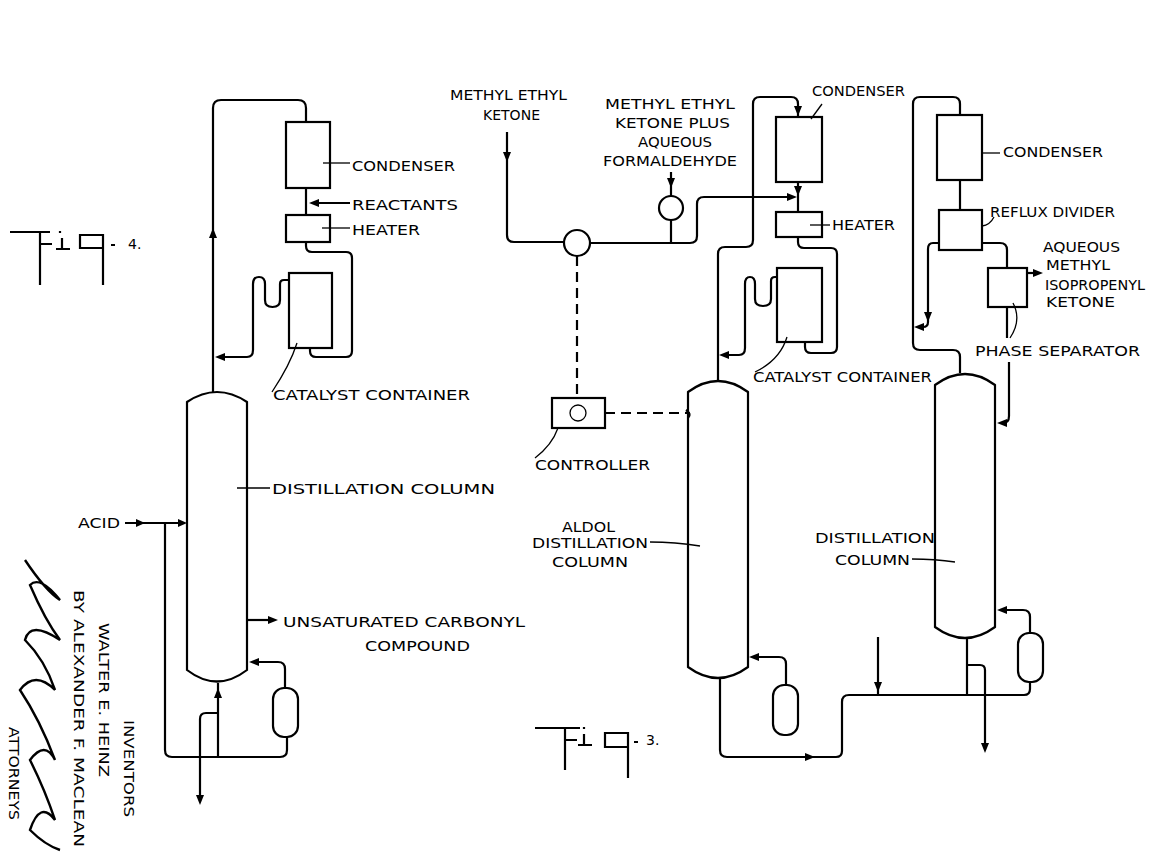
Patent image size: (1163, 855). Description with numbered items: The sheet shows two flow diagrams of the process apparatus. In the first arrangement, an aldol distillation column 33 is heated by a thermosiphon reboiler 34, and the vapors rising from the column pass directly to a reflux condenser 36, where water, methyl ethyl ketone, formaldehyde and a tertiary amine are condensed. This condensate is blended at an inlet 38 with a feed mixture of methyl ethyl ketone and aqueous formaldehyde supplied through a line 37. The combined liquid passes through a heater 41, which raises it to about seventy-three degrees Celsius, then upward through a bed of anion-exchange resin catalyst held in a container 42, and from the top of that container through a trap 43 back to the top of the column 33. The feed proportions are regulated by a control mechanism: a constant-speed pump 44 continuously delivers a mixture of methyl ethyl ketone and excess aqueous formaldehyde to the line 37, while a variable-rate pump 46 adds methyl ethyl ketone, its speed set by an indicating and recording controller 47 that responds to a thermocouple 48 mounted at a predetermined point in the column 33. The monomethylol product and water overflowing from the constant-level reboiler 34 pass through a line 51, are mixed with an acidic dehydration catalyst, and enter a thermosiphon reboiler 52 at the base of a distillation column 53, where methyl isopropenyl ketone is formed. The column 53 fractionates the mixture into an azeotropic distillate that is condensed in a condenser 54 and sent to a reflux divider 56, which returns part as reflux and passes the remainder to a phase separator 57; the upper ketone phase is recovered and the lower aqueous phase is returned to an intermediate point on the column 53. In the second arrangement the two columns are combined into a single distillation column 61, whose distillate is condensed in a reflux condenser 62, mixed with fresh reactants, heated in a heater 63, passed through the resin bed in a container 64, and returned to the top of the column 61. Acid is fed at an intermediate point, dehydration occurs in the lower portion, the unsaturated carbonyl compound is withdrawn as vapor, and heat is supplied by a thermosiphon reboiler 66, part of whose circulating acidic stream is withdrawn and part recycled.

In FIG. 3, the aldol distillation column 33 is at (748, 483).
In FIG. 3, the thermosiphon reboiler 34 is at (697, 695).
In FIG. 3, the reflux condenser 36 is at (822, 143).
In FIG. 3, the line 37 is at (694, 244).
In FIG. 3, the inlet 38 is at (805, 197).
In FIG. 3, the heater 41 is at (818, 218).
In FIG. 3, the container 42 is at (810, 309).
In FIG. 3, the trap 43 is at (744, 283).
In FIG. 3, the pump 44 is at (659, 210).
In FIG. 3, the pump 46 is at (587, 252).
In FIG. 3, the indicating and recording controller 47 is at (600, 398).
In FIG. 3, the thermocouple 48 is at (690, 420).
In FIG. 3, the line 51 is at (892, 698).
In FIG. 3, the thermosiphon reboiler 52 is at (950, 651).
In FIG. 3, the distillation column 53 is at (942, 447).
In FIG. 3, the condenser 54 is at (982, 131).
In FIG. 3, the reflux divider 56 is at (970, 239).
In FIG. 3, the phase separator 57 is at (1017, 296).
In FIG. 4, the distillation column 61 is at (243, 531).
In FIG. 4, the reflux condenser 62 is at (318, 158).
In FIG. 4, the heater 63 is at (318, 238).
In FIG. 4, the container 64 is at (320, 319).
In FIG. 4, the thermosiphon reboiler 66 is at (322, 710).